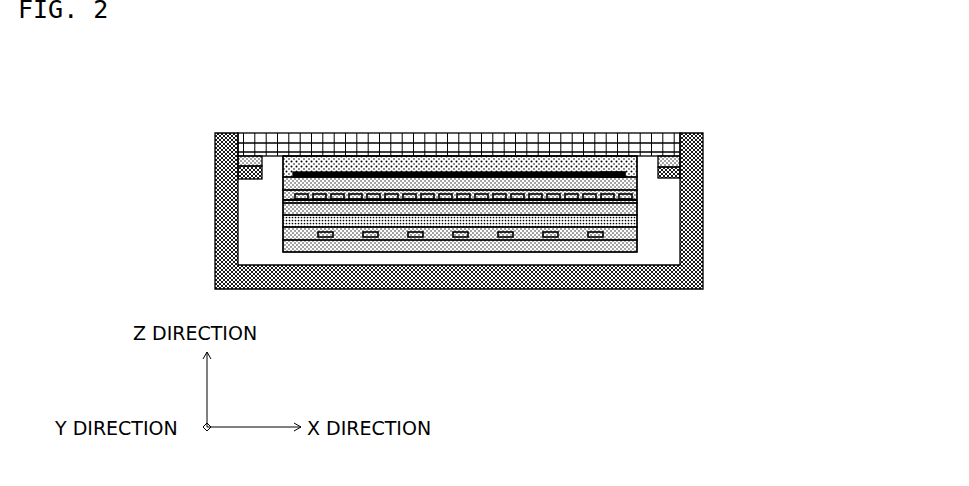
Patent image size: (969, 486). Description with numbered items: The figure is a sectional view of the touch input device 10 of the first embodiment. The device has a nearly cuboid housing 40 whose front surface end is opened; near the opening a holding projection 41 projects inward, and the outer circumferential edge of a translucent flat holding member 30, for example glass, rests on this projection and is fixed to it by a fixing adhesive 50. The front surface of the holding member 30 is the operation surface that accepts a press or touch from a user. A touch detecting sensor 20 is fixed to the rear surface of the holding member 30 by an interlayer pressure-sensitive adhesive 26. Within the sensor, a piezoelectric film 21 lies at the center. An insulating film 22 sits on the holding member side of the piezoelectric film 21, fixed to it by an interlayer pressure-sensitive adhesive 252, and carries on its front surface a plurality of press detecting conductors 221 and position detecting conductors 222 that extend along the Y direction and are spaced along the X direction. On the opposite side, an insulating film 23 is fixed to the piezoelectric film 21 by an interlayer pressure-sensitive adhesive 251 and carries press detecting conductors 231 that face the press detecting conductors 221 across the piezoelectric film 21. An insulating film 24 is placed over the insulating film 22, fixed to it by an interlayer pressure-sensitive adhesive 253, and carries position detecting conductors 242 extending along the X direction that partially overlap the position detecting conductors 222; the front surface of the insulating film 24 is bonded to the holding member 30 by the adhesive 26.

The touch input device 10 is at (687, 98).
The touch detecting sensor 20 is at (750, 147).
The piezoelectric film 21 is at (638, 221).
The insulating film 22 is at (638, 199).
The insulating film 23 is at (638, 246).
The insulating film 24 is at (638, 178).
The position detecting conductor 242 is at (600, 175).
The interlayer pressure-sensitive adhesive 26 is at (503, 162).
The holding member 30 is at (412, 145).
The housing 40 is at (215, 272).
The holding projection 41 is at (266, 154).
The fixing adhesive 50 is at (248, 154).
The press detecting conductor 221 is at (604, 201).
The position detecting conductor 222 is at (617, 201).
The press detecting conductor 231 is at (592, 238).
The interlayer pressure-sensitive adhesive 251 is at (638, 233).
The interlayer pressure-sensitive adhesive 252 is at (638, 209).
The interlayer pressure-sensitive adhesive 253 is at (638, 190).